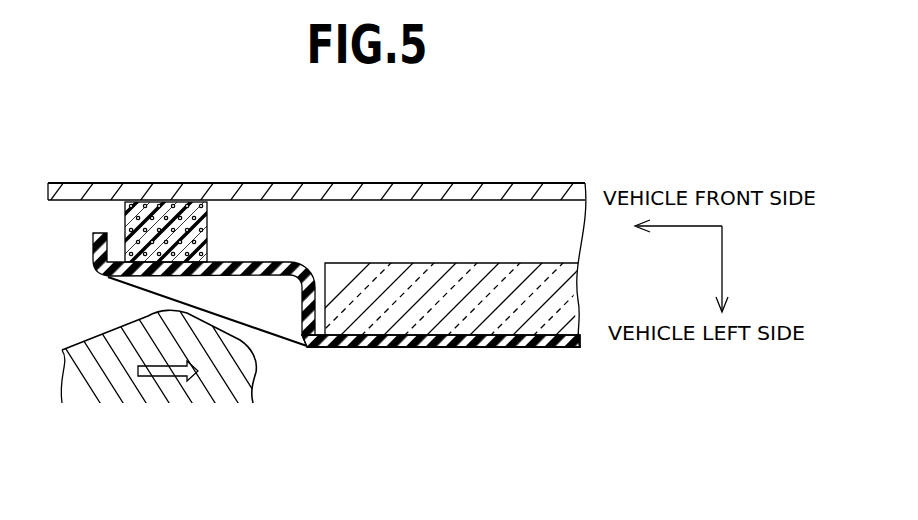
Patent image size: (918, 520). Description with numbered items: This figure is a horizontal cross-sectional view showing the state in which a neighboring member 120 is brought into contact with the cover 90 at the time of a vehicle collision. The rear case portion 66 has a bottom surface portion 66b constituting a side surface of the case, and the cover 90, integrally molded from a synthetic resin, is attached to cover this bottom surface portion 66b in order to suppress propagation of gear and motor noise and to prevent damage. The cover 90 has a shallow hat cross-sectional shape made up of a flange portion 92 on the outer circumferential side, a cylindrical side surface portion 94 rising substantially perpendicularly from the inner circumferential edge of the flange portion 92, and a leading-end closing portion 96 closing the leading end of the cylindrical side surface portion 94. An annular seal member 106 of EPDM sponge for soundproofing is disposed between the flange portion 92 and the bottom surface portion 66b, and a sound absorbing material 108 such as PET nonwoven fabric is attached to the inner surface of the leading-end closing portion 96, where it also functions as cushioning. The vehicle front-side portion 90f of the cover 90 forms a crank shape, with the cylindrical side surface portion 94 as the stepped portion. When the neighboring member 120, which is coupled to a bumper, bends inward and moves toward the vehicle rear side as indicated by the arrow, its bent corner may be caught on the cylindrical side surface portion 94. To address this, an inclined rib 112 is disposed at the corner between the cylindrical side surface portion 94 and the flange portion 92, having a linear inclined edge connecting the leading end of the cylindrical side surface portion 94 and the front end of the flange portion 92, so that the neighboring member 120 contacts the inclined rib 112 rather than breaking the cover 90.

The rear case portion 66 is at (537, 170).
The bottom surface portion 66b is at (412, 193).
The cover 90 is at (371, 376).
The vehicle front-side portion 90f is at (289, 387).
The flange portion 92 is at (158, 273).
The cylindrical side surface portion 94 is at (342, 337).
The leading-end closing portion 96 is at (399, 341).
The seal member 106 is at (152, 222).
The sound absorbing material 108 is at (477, 318).
The inclined rib 112 is at (262, 297).
The neighboring member 120 is at (118, 370).